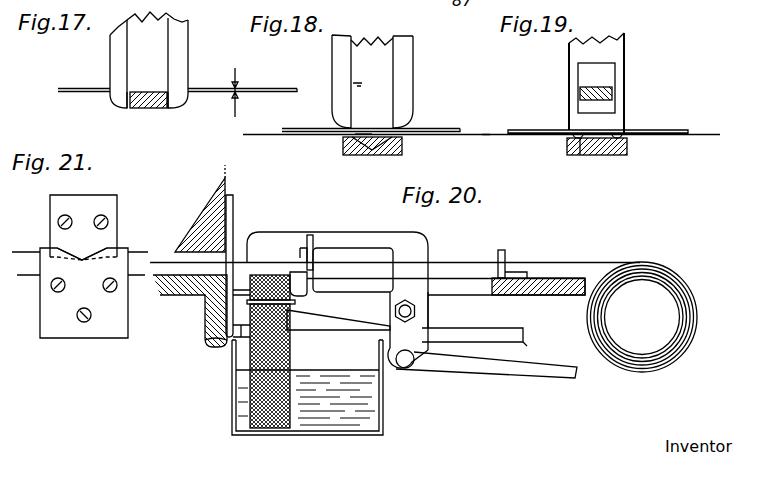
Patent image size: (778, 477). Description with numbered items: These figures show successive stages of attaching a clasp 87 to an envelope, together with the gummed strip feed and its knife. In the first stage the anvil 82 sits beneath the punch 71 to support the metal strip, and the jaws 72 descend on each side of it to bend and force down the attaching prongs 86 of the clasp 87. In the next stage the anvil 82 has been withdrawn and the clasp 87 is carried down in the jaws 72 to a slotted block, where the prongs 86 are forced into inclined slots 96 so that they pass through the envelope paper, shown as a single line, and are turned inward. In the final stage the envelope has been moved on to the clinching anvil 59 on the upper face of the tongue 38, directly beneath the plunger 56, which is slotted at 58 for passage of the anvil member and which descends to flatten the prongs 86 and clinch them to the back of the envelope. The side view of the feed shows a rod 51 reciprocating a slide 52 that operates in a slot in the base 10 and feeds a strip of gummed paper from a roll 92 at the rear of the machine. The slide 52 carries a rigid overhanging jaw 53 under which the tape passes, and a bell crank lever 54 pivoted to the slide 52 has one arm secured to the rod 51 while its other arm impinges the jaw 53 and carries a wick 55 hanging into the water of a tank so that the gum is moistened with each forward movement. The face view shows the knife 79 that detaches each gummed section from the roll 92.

In FIG. 20, the base 10 is at (538, 295).
In FIG. 18, the tongue 38 is at (345, 146).
In FIG. 19, the tongue 38 is at (630, 150).
In FIG. 20, the rod 51 is at (490, 375).
In FIG. 20, the slide 52 is at (428, 304).
In FIG. 20, the overhanging jaw 53 is at (418, 241).
In FIG. 20, the bell crank lever 54 is at (357, 330).
In FIG. 20, the wick 55 is at (252, 362).
In FIG. 19, the plunger 56 is at (617, 50).
In FIG. 19, the slot 58 is at (583, 76).
In FIG. 19, the anvil 59 is at (580, 95).
In FIG. 17, the punch 71 is at (163, 43).
In FIG. 18, the punch 71 is at (378, 53).
In FIG. 17, the jaws 72 is at (110, 66).
In FIG. 18, the jaws 72 is at (332, 66).
In FIG. 21, the knife 79 is at (110, 232).
In FIG. 20, the knife 79 is at (233, 213).
In FIG. 17, the anvil 82 is at (152, 110).
In FIG. 17, the attaching prongs 86 is at (128, 110).
In FIG. 18, the attaching prongs 86 is at (380, 152).
In FIG. 19, the attaching prongs 86 is at (581, 156).
In FIG. 17, the clasp 87 is at (106, 95).
In FIG. 18, the clasp 87 is at (380, 125).
In FIG. 19, the clasp 87 is at (630, 130).
In FIG. 20, the roll 92 is at (694, 299).
In FIG. 18, the inclined slots 96 is at (403, 148).